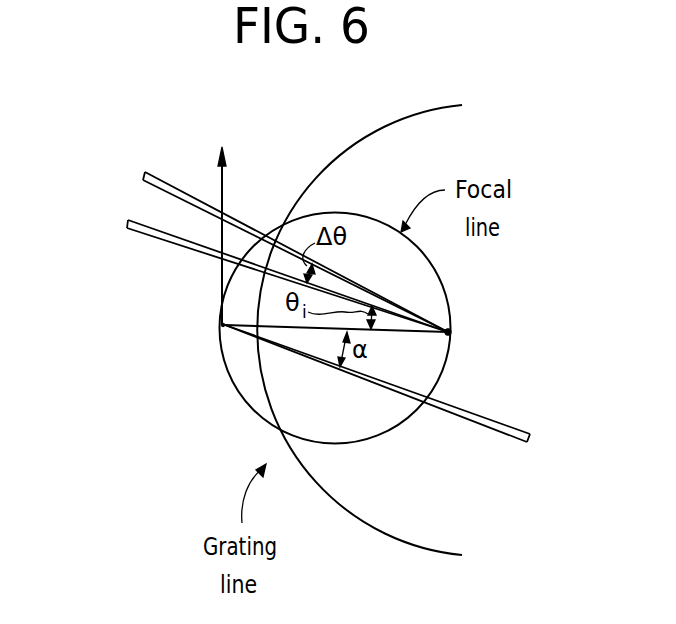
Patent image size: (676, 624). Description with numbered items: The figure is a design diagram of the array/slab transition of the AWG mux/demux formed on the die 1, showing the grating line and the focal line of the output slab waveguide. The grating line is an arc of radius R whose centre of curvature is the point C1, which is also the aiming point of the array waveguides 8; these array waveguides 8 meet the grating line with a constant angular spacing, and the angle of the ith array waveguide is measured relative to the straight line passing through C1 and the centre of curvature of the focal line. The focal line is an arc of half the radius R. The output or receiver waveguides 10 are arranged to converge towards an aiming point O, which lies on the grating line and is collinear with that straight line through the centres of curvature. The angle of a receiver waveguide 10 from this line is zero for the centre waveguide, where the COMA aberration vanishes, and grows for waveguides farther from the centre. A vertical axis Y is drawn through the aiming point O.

The array waveguides 8 is at (147, 236).
The output waveguides 10 is at (475, 412).
The centre of curvature of the grating line C1 is at (466, 333).
The substrate or die 1 is at (466, 340).
The aiming point O is at (210, 324).
The radius of the grating line R is at (336, 313).
The Y axis Y is at (231, 234).